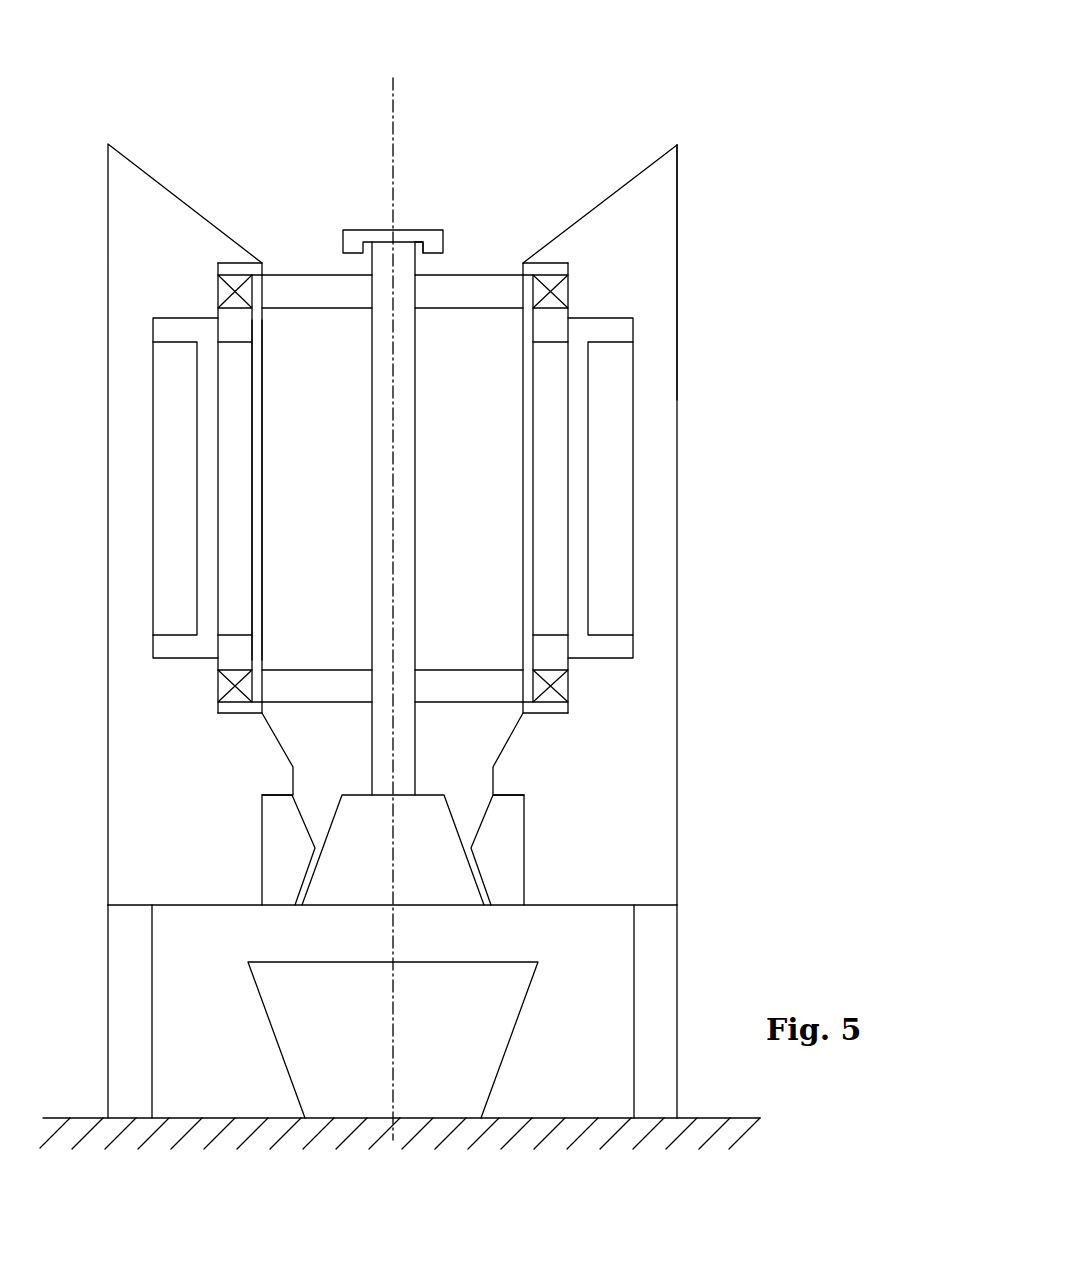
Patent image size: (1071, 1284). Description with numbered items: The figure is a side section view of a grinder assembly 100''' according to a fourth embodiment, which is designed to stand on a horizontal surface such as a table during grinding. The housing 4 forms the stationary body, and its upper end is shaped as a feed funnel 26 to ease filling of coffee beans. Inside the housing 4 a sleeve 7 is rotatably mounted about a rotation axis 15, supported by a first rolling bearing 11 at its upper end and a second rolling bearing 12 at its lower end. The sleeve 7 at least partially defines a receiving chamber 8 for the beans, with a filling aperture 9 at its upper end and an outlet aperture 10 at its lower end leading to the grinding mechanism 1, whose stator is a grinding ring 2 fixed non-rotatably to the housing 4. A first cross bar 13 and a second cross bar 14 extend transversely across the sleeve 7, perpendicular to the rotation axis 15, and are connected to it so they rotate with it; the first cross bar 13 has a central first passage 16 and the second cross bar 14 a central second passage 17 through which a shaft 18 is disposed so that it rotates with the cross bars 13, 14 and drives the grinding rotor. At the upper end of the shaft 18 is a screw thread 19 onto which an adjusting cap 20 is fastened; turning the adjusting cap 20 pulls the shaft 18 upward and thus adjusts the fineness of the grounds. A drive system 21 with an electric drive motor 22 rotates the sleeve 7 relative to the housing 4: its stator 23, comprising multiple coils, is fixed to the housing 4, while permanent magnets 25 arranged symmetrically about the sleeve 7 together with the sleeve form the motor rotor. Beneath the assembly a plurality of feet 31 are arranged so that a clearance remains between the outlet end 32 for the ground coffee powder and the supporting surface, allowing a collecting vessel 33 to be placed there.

The grinder assembly 100''' is at (803, 232).
The grinding mechanism 1 is at (247, 851).
The grinding ring 2 is at (508, 885).
The housing 4 is at (657, 737).
The sleeve 7 is at (261, 412).
The receiving chamber 8 is at (473, 471).
The filling aperture 9 is at (476, 235).
The outlet aperture 10 is at (441, 725).
The first rolling bearing 11 is at (549, 278).
The second rolling bearing 12 is at (548, 710).
The first cross bar 13 is at (460, 290).
The second cross bar 14 is at (455, 678).
The rotation axis 15 is at (395, 142).
The first passage 16 is at (360, 322).
The second passage 17 is at (360, 661).
The shaft 18 is at (407, 530).
The screw thread 19 is at (420, 250).
The adjusting cap 20 is at (363, 238).
The drive system 21 is at (632, 266).
The electric drive motor 22 is at (622, 330).
The stator 23 is at (614, 476).
The permanent magnets 25 is at (237, 460).
The feed funnel 26 is at (172, 103).
The feet 31 is at (124, 1003).
The outlet end 32 is at (314, 931).
The collecting vessel 33 is at (468, 1050).